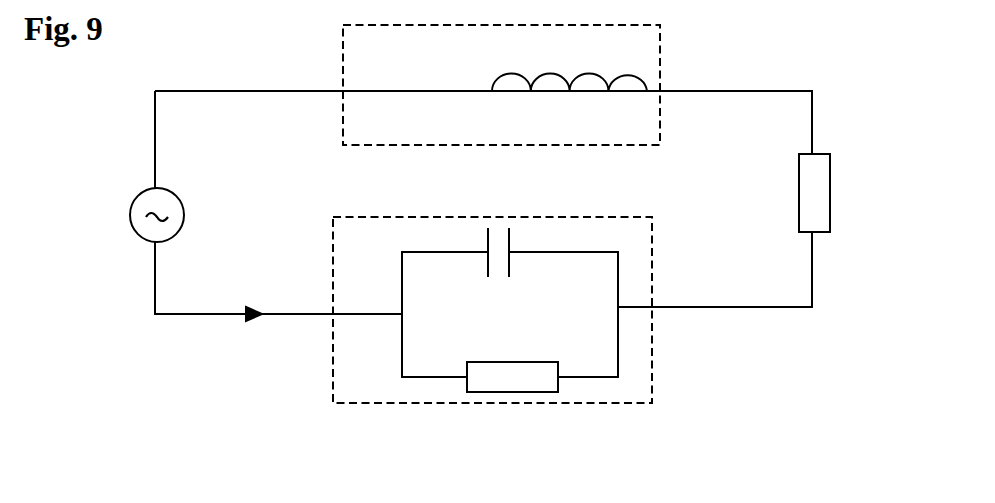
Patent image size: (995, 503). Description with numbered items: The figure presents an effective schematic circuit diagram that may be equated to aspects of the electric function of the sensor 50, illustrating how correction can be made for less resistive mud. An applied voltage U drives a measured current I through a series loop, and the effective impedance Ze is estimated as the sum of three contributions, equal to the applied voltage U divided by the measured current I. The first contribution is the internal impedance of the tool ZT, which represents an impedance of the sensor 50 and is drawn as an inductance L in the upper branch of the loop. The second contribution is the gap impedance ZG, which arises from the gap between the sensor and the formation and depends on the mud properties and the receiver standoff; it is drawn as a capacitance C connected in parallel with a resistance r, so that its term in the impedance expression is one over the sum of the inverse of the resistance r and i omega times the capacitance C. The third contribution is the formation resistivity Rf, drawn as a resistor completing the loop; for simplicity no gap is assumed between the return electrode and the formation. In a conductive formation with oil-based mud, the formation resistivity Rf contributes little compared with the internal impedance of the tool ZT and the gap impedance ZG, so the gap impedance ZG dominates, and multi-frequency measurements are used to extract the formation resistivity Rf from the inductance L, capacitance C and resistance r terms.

The sensor 50 is at (482, 251).
The applied voltage U is at (135, 215).
The measured current I is at (261, 296).
The internal impedance of the tool ZT is at (501, 85).
The inductance L is at (569, 62).
The formation resistivity Rf is at (838, 193).
The gap impedance ZG is at (492, 310).
The capacitance C is at (480, 262).
The resistance r is at (512, 357).